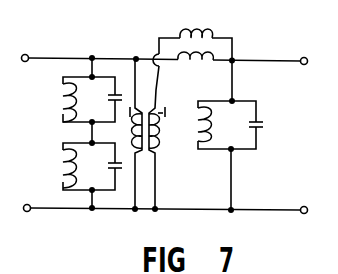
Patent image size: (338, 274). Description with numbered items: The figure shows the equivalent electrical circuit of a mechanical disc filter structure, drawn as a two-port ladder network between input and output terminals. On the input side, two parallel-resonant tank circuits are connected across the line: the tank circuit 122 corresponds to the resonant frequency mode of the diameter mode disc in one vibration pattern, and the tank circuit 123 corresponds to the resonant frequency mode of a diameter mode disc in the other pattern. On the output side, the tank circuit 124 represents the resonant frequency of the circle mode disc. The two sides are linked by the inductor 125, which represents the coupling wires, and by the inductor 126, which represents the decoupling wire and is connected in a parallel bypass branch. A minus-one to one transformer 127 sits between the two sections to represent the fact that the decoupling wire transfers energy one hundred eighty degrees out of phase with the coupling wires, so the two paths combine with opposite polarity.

The tank circuit 122 is at (63, 79).
The tank circuit 123 is at (63, 144).
The tank circuit 124 is at (250, 109).
The inductor 125 is at (189, 63).
The inductor 126 is at (200, 34).
The transformer 127 is at (144, 152).